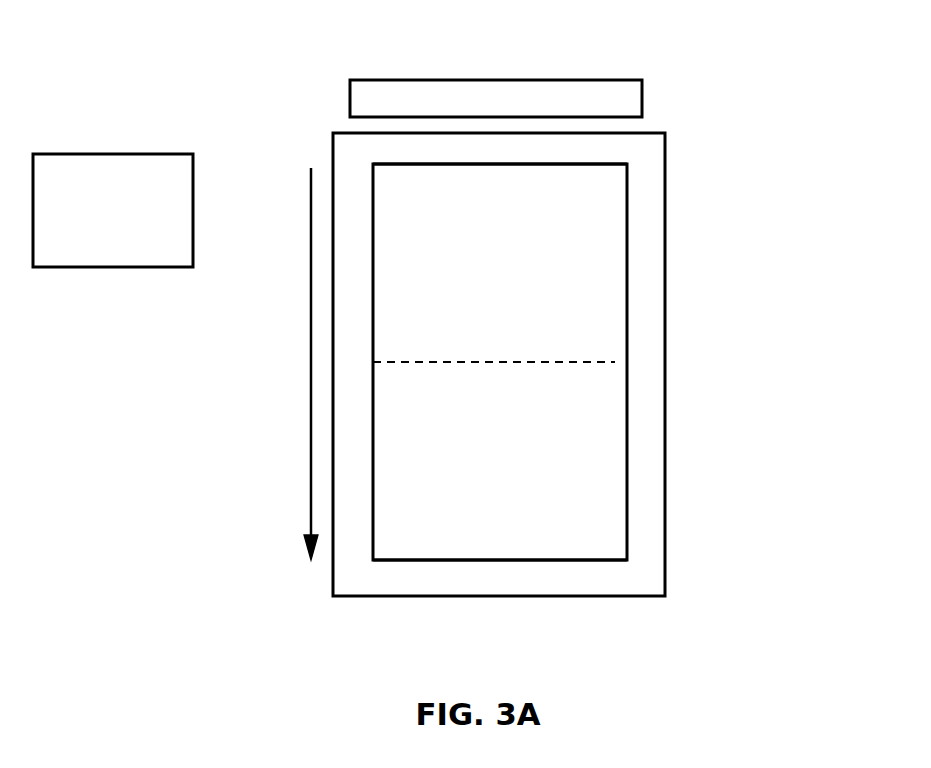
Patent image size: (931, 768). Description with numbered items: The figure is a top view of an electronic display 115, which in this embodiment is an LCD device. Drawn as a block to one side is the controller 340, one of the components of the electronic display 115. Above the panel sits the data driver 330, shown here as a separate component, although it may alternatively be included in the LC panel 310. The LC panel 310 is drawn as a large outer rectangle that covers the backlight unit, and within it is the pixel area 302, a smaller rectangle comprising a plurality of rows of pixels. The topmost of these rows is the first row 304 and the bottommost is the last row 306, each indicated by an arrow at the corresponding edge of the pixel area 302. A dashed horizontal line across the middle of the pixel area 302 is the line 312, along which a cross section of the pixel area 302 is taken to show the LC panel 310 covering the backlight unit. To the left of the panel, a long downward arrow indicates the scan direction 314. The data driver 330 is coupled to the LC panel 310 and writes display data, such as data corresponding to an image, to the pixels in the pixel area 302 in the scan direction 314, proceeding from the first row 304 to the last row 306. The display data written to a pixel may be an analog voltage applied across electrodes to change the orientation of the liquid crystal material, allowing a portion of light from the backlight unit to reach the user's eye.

The electronic display 115 is at (120, 94).
The controller 340 is at (135, 236).
The data driver 330 is at (643, 80).
The LC panel 310 is at (665, 365).
The pixel area 302 is at (623, 477).
The first row 304 is at (646, 167).
The last row 306 is at (648, 558).
The line 312 is at (587, 360).
The scan direction 314 is at (262, 408).